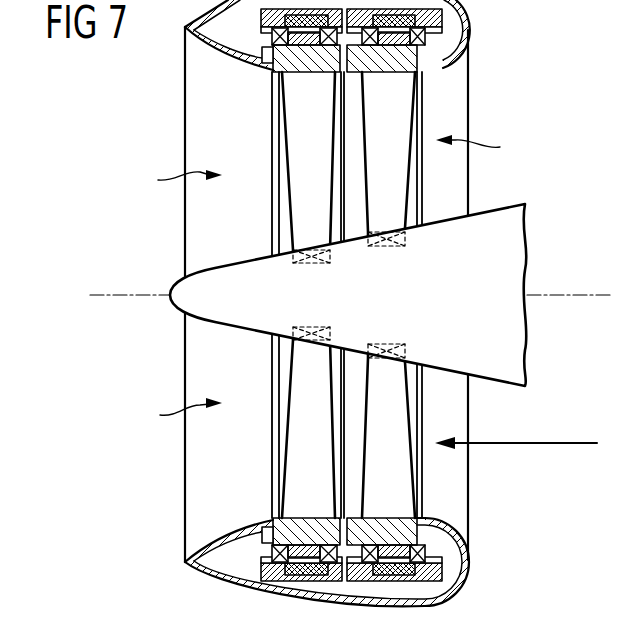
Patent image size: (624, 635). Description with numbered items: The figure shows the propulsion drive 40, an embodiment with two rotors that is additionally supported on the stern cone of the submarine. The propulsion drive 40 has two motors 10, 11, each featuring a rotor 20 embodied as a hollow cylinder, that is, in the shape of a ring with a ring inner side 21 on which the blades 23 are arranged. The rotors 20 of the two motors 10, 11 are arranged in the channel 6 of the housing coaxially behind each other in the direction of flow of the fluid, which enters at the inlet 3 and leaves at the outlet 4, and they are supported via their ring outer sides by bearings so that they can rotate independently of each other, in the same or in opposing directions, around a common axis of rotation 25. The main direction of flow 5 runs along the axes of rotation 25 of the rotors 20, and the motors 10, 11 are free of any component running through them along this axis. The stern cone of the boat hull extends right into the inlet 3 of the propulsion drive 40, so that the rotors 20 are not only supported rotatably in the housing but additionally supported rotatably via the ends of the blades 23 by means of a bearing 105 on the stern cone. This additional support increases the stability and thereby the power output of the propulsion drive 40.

The inlet 3 is at (182, 180).
The outlet 4 is at (477, 147).
The main direction of flow 5 is at (547, 443).
The channel 6 is at (182, 413).
The motor 10 is at (413, 403).
The motor 11 is at (285, 445).
The rotor 20 is at (267, 60).
The ring inner side 21 is at (403, 80).
The blades 23 is at (388, 165).
The axis of rotation 25 is at (105, 293).
The propulsion drive 40 is at (548, 92).
The bearing 105 is at (308, 262).